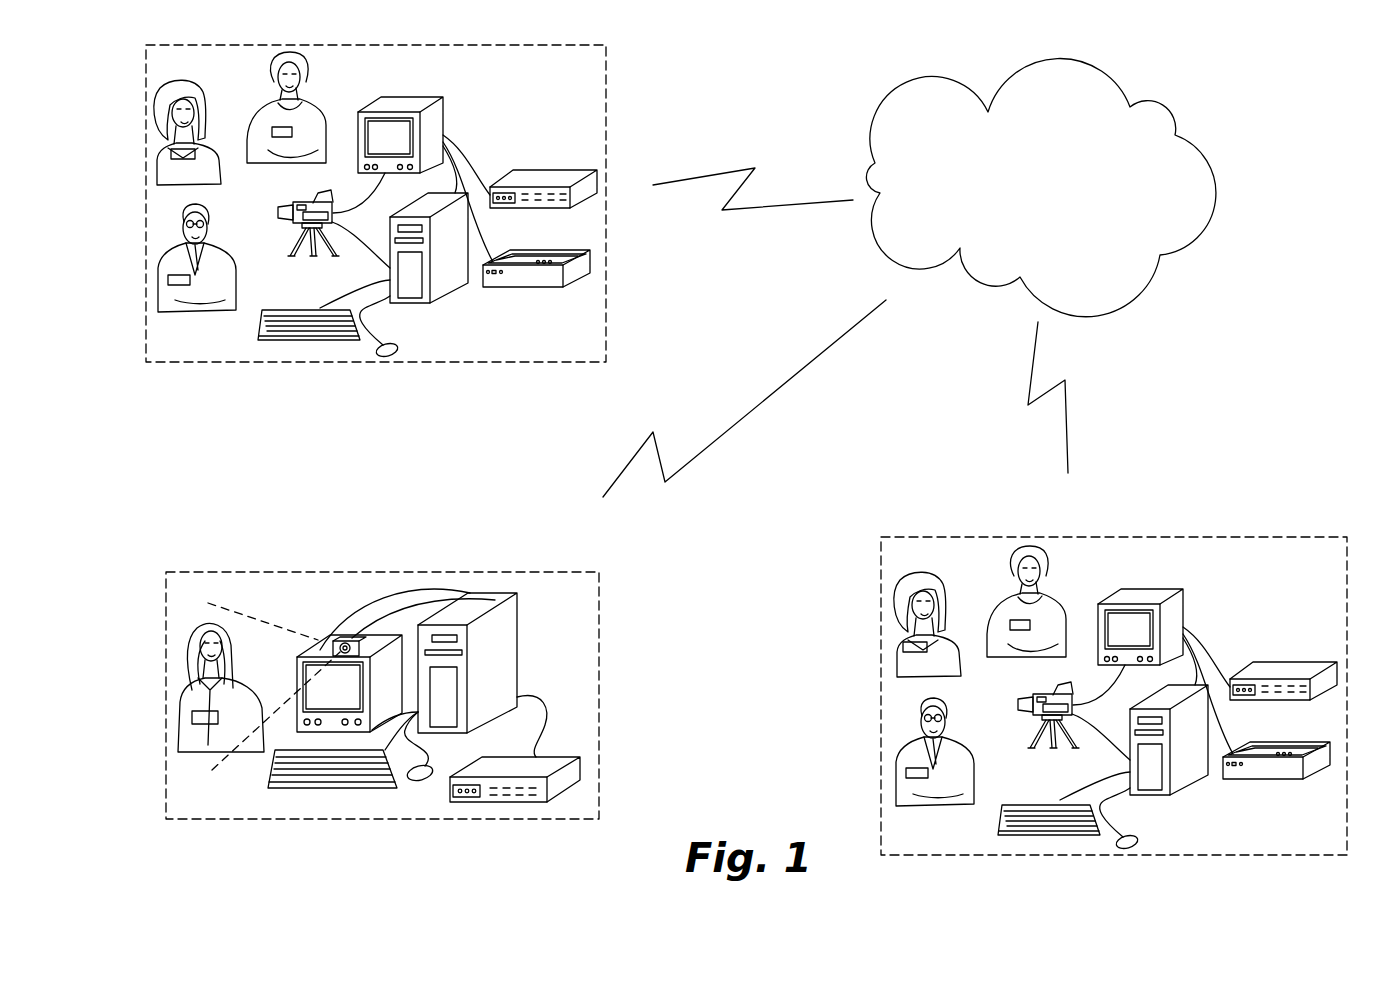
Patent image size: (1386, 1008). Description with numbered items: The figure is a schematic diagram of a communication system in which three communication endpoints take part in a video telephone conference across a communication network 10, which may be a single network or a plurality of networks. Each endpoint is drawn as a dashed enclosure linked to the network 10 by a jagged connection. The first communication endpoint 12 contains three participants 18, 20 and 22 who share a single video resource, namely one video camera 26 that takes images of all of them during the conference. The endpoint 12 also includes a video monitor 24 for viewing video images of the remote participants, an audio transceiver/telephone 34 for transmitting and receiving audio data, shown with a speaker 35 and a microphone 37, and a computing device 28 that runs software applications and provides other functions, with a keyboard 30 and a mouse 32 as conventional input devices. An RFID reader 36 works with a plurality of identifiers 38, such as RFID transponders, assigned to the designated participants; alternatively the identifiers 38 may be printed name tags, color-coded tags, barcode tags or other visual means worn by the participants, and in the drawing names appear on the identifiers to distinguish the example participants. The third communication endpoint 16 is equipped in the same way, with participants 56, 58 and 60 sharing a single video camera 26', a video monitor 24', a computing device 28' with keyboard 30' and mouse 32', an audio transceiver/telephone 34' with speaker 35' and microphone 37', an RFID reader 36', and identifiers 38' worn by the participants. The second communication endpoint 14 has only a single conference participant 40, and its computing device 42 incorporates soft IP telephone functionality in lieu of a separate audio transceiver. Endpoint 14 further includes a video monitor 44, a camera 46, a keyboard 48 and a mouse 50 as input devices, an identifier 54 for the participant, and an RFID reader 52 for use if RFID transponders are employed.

The communication network 10 is at (947, 90).
The communication endpoint 12 is at (146, 205).
The communication endpoint 14 is at (165, 753).
The communication endpoint 16 is at (1150, 537).
The participant 18 is at (280, 60).
The participant 20 is at (178, 93).
The participant 22 is at (182, 234).
The video monitor 24 is at (427, 122).
The video camera 26 is at (293, 223).
The computing device 28 is at (429, 248).
The keyboard 30 is at (288, 334).
The mouse 32 is at (417, 327).
The audio transceiver/telephone 34 is at (536, 296).
The speaker 35 is at (537, 244).
The RFID reader 36 is at (543, 169).
The microphone 37 is at (507, 306).
The identifier 38 is at (194, 220).
The conference participant 40 is at (195, 637).
The computing device 42 is at (507, 687).
The video monitor 44 is at (312, 666).
The camera 46 is at (347, 640).
The keyboard 48 is at (272, 770).
The mouse 50 is at (417, 783).
The RFID reader 52 is at (541, 803).
The identifier 54 is at (192, 718).
The participant 56 is at (900, 583).
The participant 58 is at (1012, 552).
The participant 60 is at (920, 725).
The video monitor 24' is at (1169, 614).
The video camera 26' is at (1023, 712).
The computing device 28' is at (1177, 751).
The keyboard 30' is at (1027, 828).
The mouse 32' is at (1162, 819).
The audio transceiver/telephone 34' is at (1279, 788).
The speaker 35' is at (1277, 733).
The RFID reader 36' is at (1283, 659).
The microphone 37' is at (1250, 798).
The identifier 38' is at (932, 712).